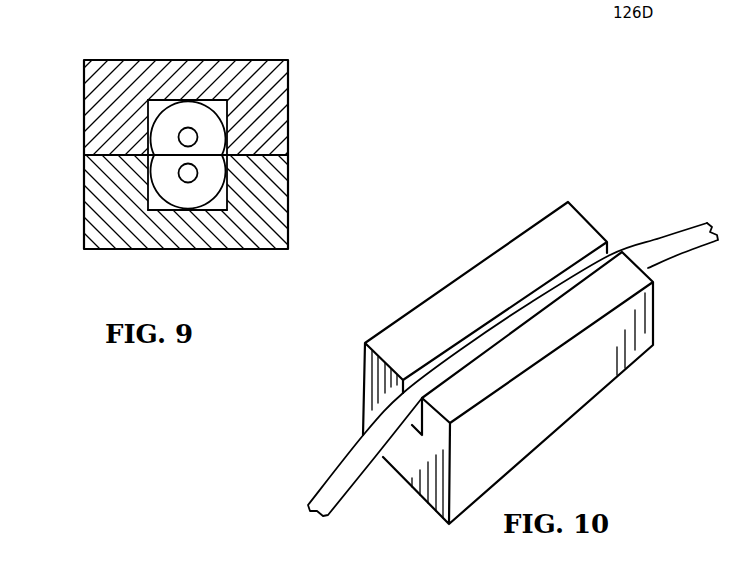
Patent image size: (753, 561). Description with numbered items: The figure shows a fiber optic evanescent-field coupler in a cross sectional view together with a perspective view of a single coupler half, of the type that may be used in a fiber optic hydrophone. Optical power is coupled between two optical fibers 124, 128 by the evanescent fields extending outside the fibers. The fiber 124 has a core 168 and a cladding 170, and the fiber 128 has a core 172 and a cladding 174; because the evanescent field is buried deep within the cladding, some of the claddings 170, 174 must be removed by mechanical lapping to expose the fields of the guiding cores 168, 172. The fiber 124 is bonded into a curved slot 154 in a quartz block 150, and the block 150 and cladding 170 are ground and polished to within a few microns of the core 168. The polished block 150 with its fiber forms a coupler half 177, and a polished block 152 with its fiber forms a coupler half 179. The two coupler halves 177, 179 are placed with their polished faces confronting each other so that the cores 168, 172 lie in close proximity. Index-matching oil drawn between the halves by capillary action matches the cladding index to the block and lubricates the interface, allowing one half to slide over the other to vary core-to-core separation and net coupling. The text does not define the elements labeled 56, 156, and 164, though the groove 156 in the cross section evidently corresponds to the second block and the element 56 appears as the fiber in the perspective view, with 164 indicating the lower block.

In FIG. 10, the optical fiber 56 is at (608, 252).
In FIG. 9, the optical fiber 124 is at (153, 117).
In FIG. 9, the optical fiber 128 is at (157, 198).
In FIG. 10, the optical fiber 128 is at (276, 497).
In FIG. 9, the quartz block 150 is at (332, 50).
In FIG. 9, the polished block 152 is at (341, 212).
In FIG. 10, the polished block 152 is at (420, 335).
In FIG. 9, the curved slot 154 is at (227, 101).
In FIG. 9, the lower groove 156 is at (227, 204).
In FIG. 10, the lower clamp block 164 is at (321, 383).
In FIG. 9, the core 168 is at (173, 125).
In FIG. 9, the cladding 170 is at (160, 139).
In FIG. 9, the core 172 is at (188, 183).
In FIG. 9, the cladding 174 is at (160, 173).
In FIG. 9, the coupler half 177 is at (416, 98).
In FIG. 9, the coupler half 179 is at (387, 193).
In FIG. 10, the coupler half 179 is at (318, 421).